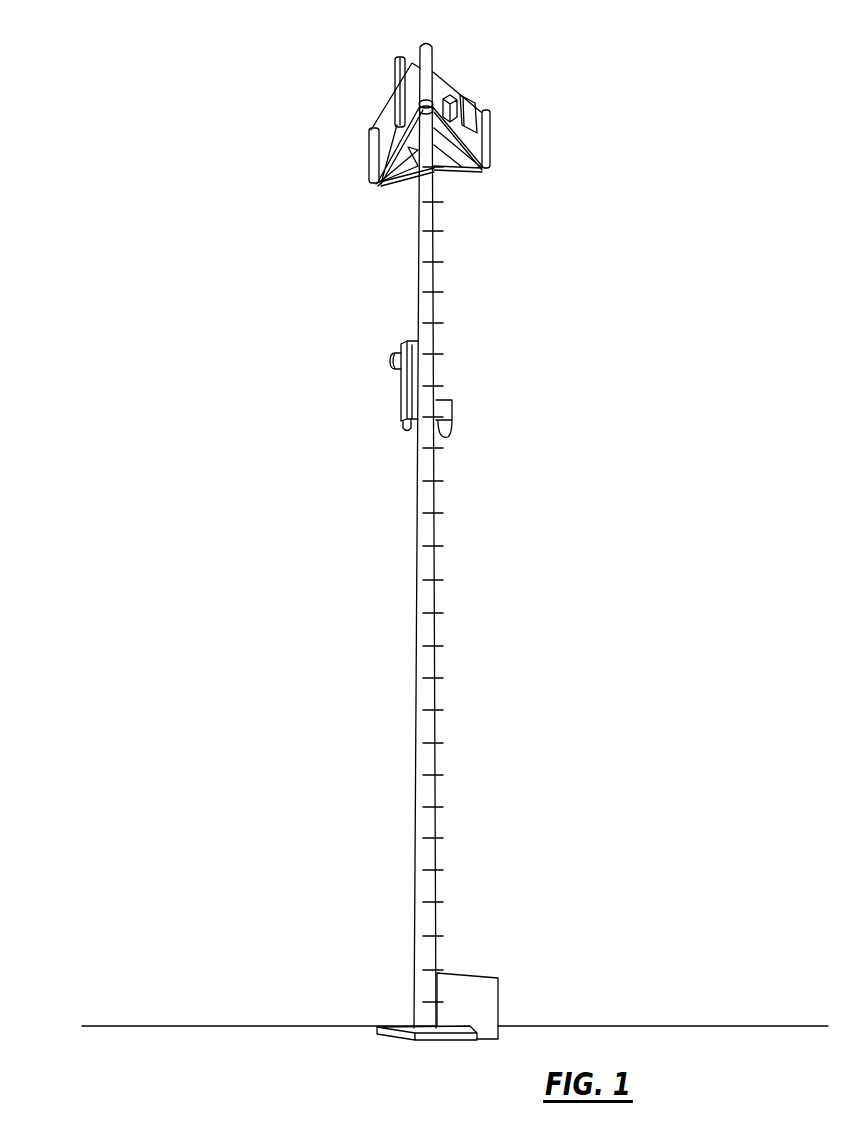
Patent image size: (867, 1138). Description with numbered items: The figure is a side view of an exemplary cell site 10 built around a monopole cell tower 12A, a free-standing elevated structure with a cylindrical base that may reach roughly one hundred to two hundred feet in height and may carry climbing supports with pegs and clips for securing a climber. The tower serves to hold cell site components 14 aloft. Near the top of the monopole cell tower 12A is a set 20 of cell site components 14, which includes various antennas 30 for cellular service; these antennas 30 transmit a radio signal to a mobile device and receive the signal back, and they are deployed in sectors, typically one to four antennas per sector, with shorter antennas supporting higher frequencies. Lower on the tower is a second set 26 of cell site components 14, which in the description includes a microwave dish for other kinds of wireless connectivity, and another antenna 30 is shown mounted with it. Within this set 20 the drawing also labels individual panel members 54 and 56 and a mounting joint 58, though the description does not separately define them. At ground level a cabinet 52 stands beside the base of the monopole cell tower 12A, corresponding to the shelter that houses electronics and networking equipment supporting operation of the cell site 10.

The cell site 10 is at (573, 264).
The monopole cell tower 12A is at (430, 725).
The cell site components 14 is at (519, 104).
The set of cell site components 20 is at (411, 62).
The set of cell site components 26 is at (403, 388).
The antenna 30 is at (428, 100).
The ground equipment cabinet 52 is at (498, 995).
The antenna panel 54 is at (387, 118).
The remote radio unit 56 is at (444, 87).
The mounting bracket 58 is at (380, 183).